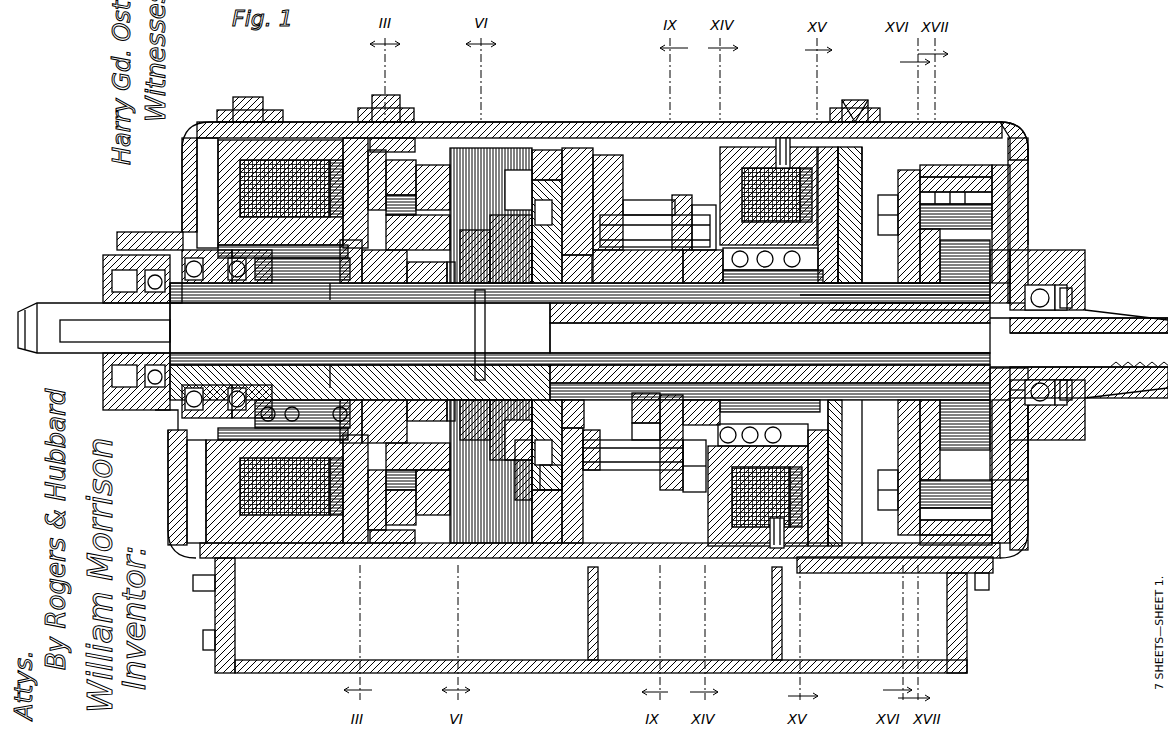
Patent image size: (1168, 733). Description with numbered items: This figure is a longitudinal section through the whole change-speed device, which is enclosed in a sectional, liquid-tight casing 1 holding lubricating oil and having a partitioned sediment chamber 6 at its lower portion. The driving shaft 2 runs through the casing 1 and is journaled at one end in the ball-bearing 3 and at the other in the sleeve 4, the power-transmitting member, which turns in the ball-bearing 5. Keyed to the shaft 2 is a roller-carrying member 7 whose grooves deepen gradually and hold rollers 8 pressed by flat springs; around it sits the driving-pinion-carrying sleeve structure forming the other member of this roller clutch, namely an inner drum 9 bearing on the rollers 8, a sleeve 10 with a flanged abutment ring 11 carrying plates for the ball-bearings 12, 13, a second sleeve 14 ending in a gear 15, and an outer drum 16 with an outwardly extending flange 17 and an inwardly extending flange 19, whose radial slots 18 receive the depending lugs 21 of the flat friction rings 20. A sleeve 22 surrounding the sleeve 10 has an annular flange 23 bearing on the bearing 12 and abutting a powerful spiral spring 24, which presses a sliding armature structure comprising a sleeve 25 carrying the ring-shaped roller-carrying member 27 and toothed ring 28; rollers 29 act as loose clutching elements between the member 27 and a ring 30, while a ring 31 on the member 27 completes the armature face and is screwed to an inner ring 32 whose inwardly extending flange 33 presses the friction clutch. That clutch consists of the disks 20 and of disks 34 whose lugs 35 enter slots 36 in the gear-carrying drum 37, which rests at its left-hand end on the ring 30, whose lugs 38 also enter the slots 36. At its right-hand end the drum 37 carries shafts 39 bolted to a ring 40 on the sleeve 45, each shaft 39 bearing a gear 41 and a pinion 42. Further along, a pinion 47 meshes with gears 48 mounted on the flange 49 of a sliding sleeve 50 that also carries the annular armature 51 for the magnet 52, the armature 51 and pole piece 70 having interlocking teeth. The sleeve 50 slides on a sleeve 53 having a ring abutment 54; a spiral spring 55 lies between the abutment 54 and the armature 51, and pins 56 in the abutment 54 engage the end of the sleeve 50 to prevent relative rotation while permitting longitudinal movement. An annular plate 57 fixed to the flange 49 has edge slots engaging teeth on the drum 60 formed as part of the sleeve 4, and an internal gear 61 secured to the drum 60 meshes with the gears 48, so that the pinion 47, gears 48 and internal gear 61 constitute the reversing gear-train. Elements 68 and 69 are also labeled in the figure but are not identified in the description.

The casing 1 is at (70, 353).
The driving shaft 2 is at (100, 350).
The ball-bearing 3 is at (110, 288).
The sleeve 4 is at (1090, 320).
The ball-bearing 5 is at (1085, 292).
The partitioned sediment chamber 6 is at (441, 341).
The roller-carrying member 7 is at (427, 341).
The roller 8 is at (300, 640).
The inner drum 9 is at (475, 385).
The sleeve 10 is at (580, 341).
The flanged abutment ring 11 is at (214, 334).
The ball-bearing 12 is at (249, 334).
The ball-bearing 13 is at (630, 428).
The second sleeve 14 is at (556, 358).
The gear 15 is at (633, 345).
The outer drum 16 is at (910, 328).
The outwardly extending flange 17 is at (551, 485).
The slots 18 is at (1028, 188).
The inwardly extending flange 19 is at (898, 182).
The annular flat friction rings 20 is at (535, 150).
The depending lugs 21 is at (569, 341).
The sleeve 22 is at (283, 342).
The annular flange 23 is at (302, 343).
The spiral spring 24 is at (343, 290).
The sleeve 25 is at (385, 346).
The ring-shaped roller-carrying member 27 is at (415, 178).
The toothed ring 28 is at (342, 335).
The rollers 29 is at (362, 122).
The ring 30 is at (395, 180).
The ring 31 is at (378, 148).
The inner ring 32 is at (430, 185).
The inwardly extending flange 33 is at (445, 200).
The disks 34 is at (495, 160).
The lugs 35 is at (510, 170).
The slots 36 is at (562, 155).
The gear-carrying drum 37 is at (580, 170).
The lugs 38 is at (398, 150).
The shafts 39 is at (636, 200).
The ring 40 is at (705, 200).
The gear 41 is at (605, 195).
The pinion 42 is at (662, 205).
The sleeve 45 is at (895, 316).
The pinion 47 is at (948, 272).
The gears 48 is at (910, 168).
The flange 49 is at (932, 168).
The sliding sleeve 50 is at (862, 230).
The annular armature 51 is at (840, 205).
The magnet 52 is at (762, 148).
The sleeve 53 is at (768, 347).
The ring abutment 54 is at (1075, 398).
The spiral spring 55 is at (771, 341).
The pins 56 is at (691, 378).
The annular plate 57 is at (888, 214).
The drum 60 is at (975, 172).
The internal gear 61 is at (960, 172).
The casing wall 68 is at (184, 213).
The magnet coil 69 is at (270, 162).
The pole piece 70 is at (782, 148).